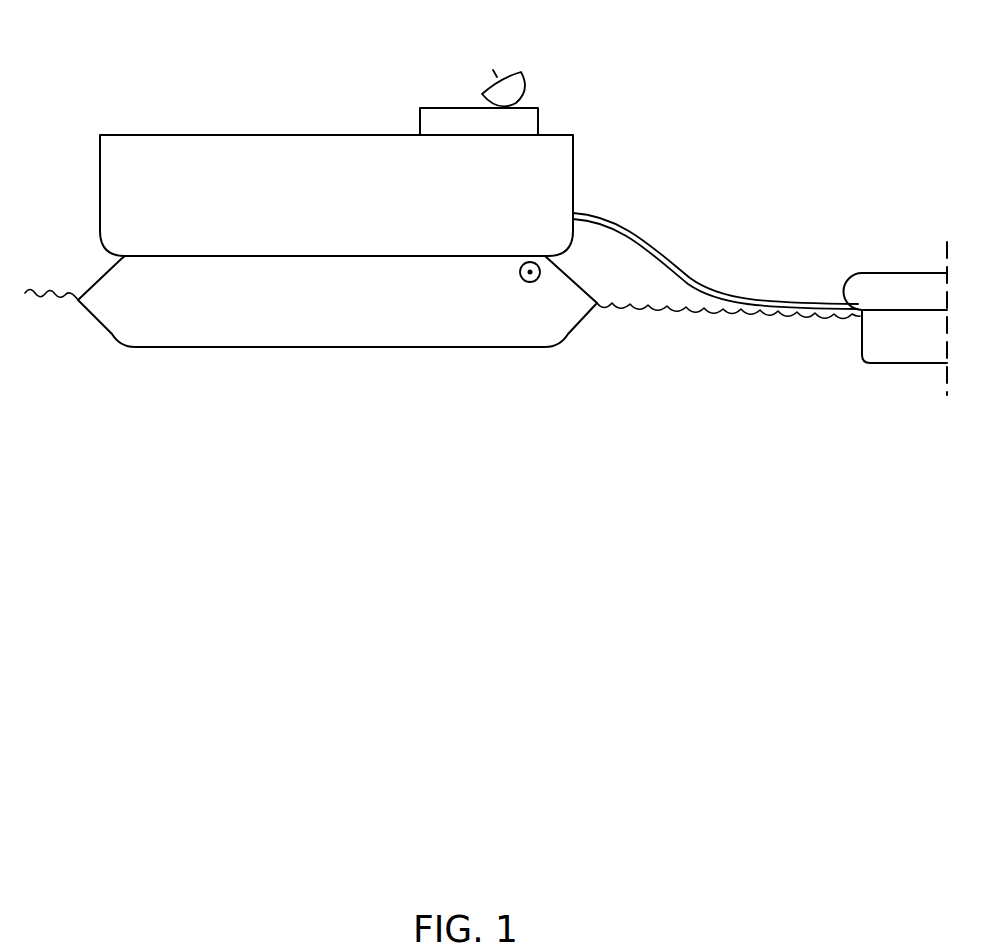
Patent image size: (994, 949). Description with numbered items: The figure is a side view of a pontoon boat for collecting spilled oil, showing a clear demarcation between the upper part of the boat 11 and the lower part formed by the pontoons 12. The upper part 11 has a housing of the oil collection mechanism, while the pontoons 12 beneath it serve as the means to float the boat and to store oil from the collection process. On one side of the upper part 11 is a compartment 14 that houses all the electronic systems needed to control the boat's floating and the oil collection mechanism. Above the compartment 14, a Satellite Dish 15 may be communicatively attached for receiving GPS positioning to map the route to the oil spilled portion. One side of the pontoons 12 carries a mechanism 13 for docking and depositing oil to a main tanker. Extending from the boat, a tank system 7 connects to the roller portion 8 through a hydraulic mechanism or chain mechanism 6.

The hydraulic mechanism or chain mechanism 6 is at (660, 252).
The tank system 7 is at (865, 287).
The roller portion 8 is at (860, 335).
The upper part of the boat 11 is at (252, 141).
The pontoons 12 is at (387, 333).
The mechanism for docking and depositing oil 13 is at (527, 283).
The compartment 14 is at (447, 118).
The Satellite Dish 15 is at (518, 90).